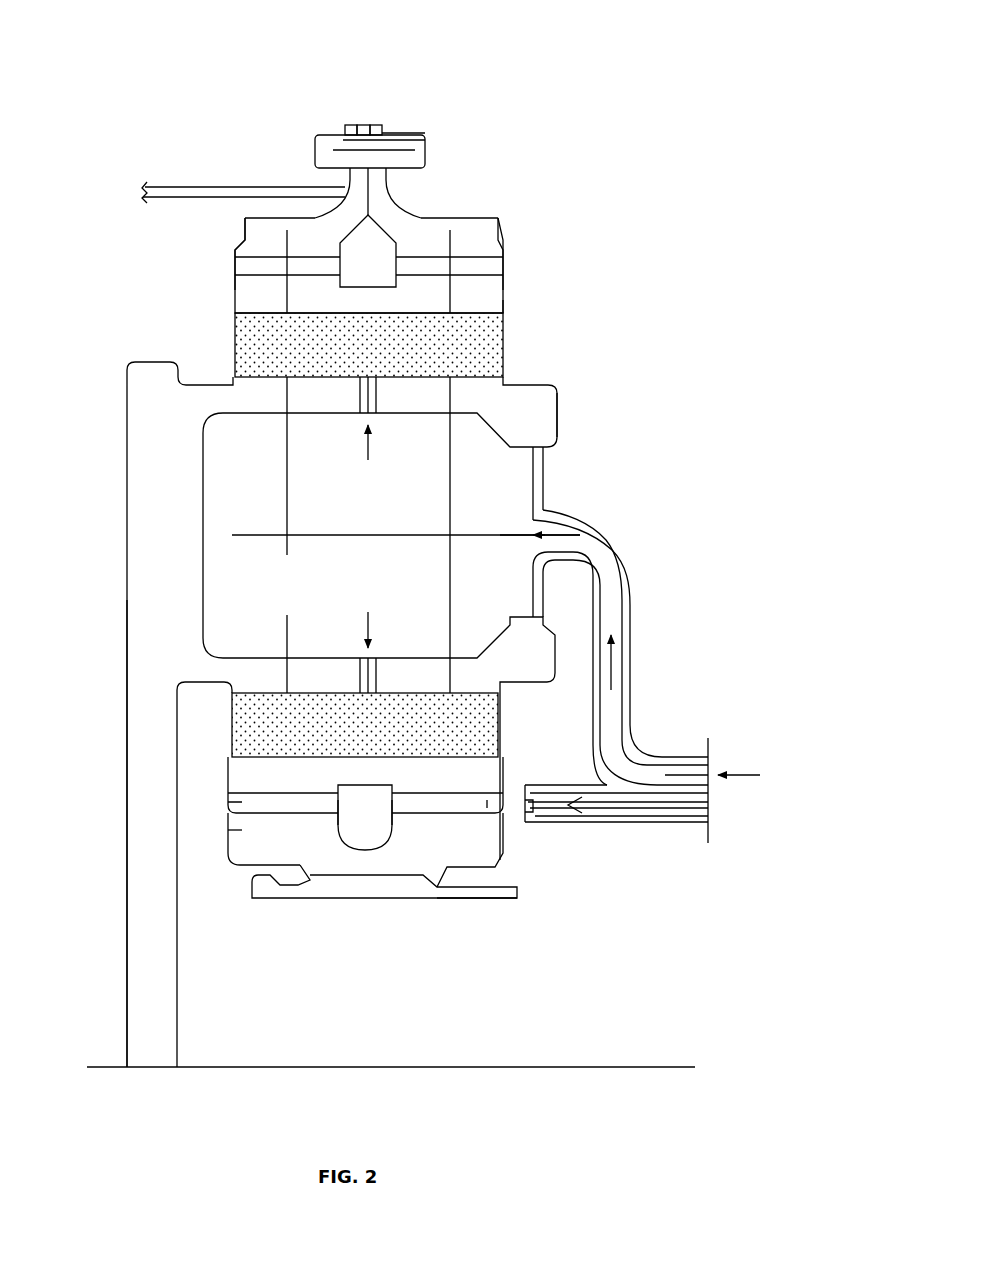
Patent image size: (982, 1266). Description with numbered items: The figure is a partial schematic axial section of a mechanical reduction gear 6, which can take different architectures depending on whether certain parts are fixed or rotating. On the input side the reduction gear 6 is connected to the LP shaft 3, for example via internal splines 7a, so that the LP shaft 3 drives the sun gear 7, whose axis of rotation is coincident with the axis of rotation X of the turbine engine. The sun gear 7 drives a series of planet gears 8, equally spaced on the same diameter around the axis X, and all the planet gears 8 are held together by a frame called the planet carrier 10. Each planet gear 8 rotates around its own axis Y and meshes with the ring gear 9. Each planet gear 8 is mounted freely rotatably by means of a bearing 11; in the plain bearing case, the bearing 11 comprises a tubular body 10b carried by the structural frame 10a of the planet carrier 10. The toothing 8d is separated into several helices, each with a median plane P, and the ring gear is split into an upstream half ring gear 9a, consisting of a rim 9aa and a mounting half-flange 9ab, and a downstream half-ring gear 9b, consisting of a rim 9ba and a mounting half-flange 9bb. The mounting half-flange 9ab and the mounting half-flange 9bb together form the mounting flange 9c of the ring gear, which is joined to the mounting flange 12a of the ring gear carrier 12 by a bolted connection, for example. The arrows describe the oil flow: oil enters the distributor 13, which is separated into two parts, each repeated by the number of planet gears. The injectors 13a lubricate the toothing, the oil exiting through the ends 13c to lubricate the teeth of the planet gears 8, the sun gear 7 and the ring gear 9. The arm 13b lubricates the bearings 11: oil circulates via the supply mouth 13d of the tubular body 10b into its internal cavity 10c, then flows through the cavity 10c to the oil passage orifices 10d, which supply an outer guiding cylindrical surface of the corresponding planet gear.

The LP shaft 3 is at (515, 895).
The reduction gear 6 is at (656, 318).
The sun gear 7 is at (228, 830).
The internal splines 7a is at (347, 880).
The planet gear 8 is at (242, 782).
The toothing 8d is at (228, 802).
The ring gear 9 is at (373, 162).
The upstream half ring gear 9a is at (242, 240).
The rim 9aa is at (263, 233).
The mounting half-flange 9ab is at (362, 125).
The downstream half-ring gear 9b is at (487, 246).
The rim 9ba is at (438, 230).
The mounting half-flange 9bb is at (378, 124).
The mounting flange 9c is at (356, 90).
The planet carrier 10 is at (381, 714).
The structural frame 10a is at (143, 477).
The tubular body 10b is at (538, 660).
The internal cavity 10c is at (406, 565).
The oil passage orifices 10d is at (378, 390).
The bearing 11 is at (492, 344).
The ring gear carrier 12 is at (191, 183).
The mounting flange 12a is at (346, 127).
The distributor 13 is at (649, 670).
The injector 13a is at (643, 818).
The arm 13b is at (633, 612).
The end 13c is at (528, 825).
The supply mouth 13d is at (545, 455).
The median plane P is at (280, 840).
The axis of rotation X is at (695, 1068).
The axis Y is at (500, 535).